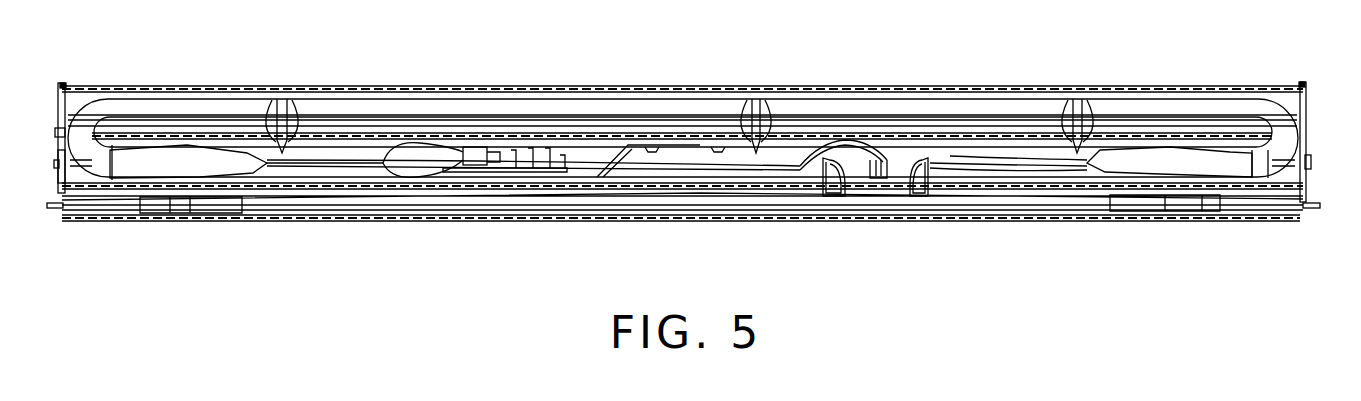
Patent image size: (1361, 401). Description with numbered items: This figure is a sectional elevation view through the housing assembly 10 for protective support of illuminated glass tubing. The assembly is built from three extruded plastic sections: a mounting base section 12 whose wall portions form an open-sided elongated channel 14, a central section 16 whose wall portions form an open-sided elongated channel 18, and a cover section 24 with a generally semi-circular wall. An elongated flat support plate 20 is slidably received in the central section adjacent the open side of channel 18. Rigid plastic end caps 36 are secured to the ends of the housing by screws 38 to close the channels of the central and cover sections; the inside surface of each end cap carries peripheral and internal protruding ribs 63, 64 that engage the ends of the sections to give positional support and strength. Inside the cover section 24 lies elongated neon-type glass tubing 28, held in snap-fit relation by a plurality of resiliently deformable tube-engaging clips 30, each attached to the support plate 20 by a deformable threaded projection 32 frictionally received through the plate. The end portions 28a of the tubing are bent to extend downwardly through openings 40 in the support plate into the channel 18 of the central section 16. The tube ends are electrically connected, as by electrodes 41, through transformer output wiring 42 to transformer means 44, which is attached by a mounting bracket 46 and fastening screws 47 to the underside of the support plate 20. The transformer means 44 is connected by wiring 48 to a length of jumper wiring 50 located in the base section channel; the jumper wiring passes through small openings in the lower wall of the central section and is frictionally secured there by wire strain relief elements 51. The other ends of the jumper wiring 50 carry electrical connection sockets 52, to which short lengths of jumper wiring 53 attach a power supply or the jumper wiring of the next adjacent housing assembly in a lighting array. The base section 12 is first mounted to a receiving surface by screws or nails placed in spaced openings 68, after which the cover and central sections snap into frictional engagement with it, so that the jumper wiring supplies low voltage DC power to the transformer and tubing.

The housing assembly 10 is at (460, 243).
The mounting base section 12 is at (392, 217).
The open-sided elongated channel 14 is at (483, 208).
The central section 16 is at (118, 188).
The open-sided elongated channel 18 is at (1000, 172).
The elongated flat support plate 20 is at (362, 122).
The cover section 24 is at (905, 88).
The glass tubing 28 is at (655, 100).
The end portions of the tubing 28a is at (98, 166).
The tube-engaging clips 30 is at (285, 105).
The deformable threaded projection 32 is at (272, 125).
The end caps 36 is at (58, 97).
The screws 38 is at (57, 162).
The openings 40 is at (66, 112).
The electrodes 41 is at (178, 163).
The transformer output wiring 42 is at (273, 160).
The transformer means 44 is at (472, 150).
The mounting bracket 46 is at (603, 158).
The fastening screws 47 is at (651, 150).
The wiring 48 is at (800, 168).
The jumper wiring 50 is at (742, 196).
The wire strain relief elements 51 is at (833, 196).
The electrical connection sockets 52 is at (215, 207).
The short lengths of jumper wiring 53 is at (50, 209).
The peripheral protruding ribs 63 is at (65, 84).
The internal protruding ribs 64 is at (1295, 170).
The spaced openings 68 is at (318, 218).